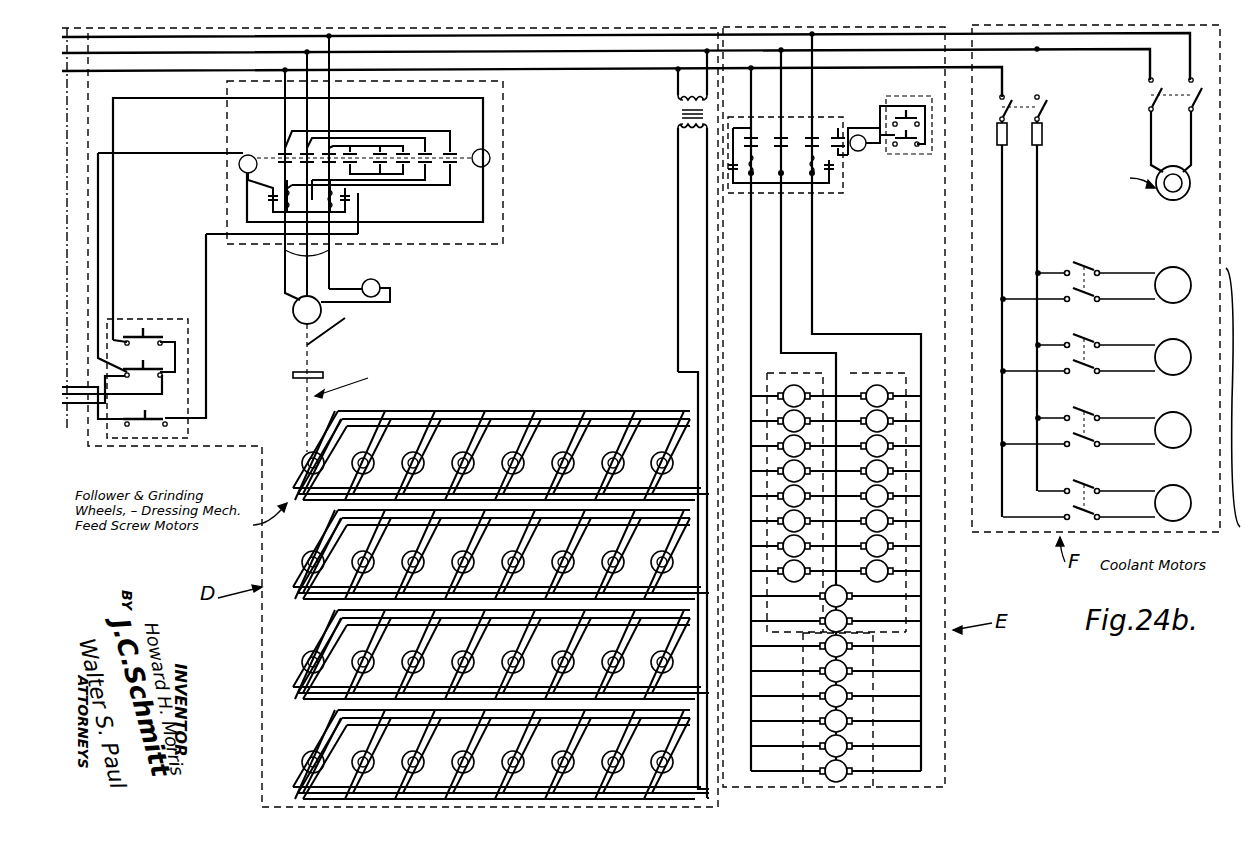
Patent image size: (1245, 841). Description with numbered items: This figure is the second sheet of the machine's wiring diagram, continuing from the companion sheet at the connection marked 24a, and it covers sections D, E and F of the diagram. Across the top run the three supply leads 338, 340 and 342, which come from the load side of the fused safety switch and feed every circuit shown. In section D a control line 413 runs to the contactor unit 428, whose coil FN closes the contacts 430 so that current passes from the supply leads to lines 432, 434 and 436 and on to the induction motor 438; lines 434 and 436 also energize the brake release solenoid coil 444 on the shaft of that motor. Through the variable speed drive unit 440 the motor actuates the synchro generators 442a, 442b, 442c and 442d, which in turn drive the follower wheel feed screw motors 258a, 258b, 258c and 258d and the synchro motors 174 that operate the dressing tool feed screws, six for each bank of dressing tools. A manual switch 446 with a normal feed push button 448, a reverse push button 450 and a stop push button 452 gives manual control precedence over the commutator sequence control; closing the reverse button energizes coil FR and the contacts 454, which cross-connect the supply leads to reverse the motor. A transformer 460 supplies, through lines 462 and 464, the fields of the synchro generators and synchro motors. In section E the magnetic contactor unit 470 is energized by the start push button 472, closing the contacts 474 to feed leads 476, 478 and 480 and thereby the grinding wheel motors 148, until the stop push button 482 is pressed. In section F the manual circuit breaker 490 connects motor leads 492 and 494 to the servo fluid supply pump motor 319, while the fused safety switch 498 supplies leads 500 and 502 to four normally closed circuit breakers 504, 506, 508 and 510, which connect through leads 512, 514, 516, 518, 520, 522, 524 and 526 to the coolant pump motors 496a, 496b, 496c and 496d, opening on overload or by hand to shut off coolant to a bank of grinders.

The sheet connection 24a is at (67, 430).
The supply lead 342 is at (262, 40).
The supply lead 340 is at (234, 55).
The supply lead 338 is at (204, 73).
The control circuit line 413 is at (100, 212).
The contactor unit 428 is at (508, 118).
The contacts 430 is at (320, 165).
The contacts 454 is at (450, 150).
The line 436 is at (320, 260).
The line 434 is at (307, 262).
The line 432 is at (285, 280).
The induction motor 438 is at (300, 322).
The brake release solenoid coil 444 is at (370, 280).
The reverse push button 450 is at (165, 339).
The normal feed push button 448 is at (165, 370).
The stop push button 452 is at (165, 427).
The manual switch 446 is at (140, 438).
The variable speed drive unit 440 is at (293, 376).
The synchro generator 442a is at (307, 456).
The synchro generator 442b is at (307, 556).
The synchro generator 442c is at (307, 656).
The synchro generator 442d is at (307, 756).
The follower wheel feed screw motor 258a is at (356, 455).
The follower wheel feed screw motor 258b is at (356, 554).
The follower wheel feed screw motor 258c is at (356, 654).
The follower wheel feed screw motor 258d is at (356, 754).
The synchro motor 174 is at (541, 605).
The transformer 460 is at (672, 117).
The line 462 is at (678, 242).
The line 464 is at (707, 270).
The magnetic contactor unit 470 is at (828, 197).
The start push button 472 is at (905, 108).
The contacts 474 is at (815, 135).
The lead 476 is at (751, 282).
The lead 478 is at (781, 303).
The lead 480 is at (812, 322).
The stop push button 482 is at (912, 150).
The manual circuit breaker 490 is at (1160, 88).
The motor lead 492 is at (1151, 128).
The motor lead 494 is at (1191, 128).
The fused safety switch 498 is at (1045, 108).
The lead 500 is at (1038, 210).
The lead 502 is at (1003, 198).
The motor 319 is at (1125, 164).
The circuit breaker 504 is at (1090, 246).
The circuit breaker 506 is at (1090, 320).
The circuit breaker 508 is at (1090, 392).
The circuit breaker 510 is at (1090, 465).
The lead 512 is at (1138, 268).
The lead 514 is at (1138, 297).
The lead 516 is at (1138, 340).
The lead 518 is at (1138, 370).
The lead 520 is at (1138, 413).
The lead 522 is at (1138, 443).
The lead 524 is at (1138, 487).
The lead 526 is at (1138, 515).
The coolant pump motor 496a is at (1188, 262).
The coolant pump motor 496b is at (1188, 335).
The coolant pump motor 496c is at (1188, 408).
The coolant pump motor 496d is at (1188, 481).
The grinding wheel motors 148 is at (857, 687).